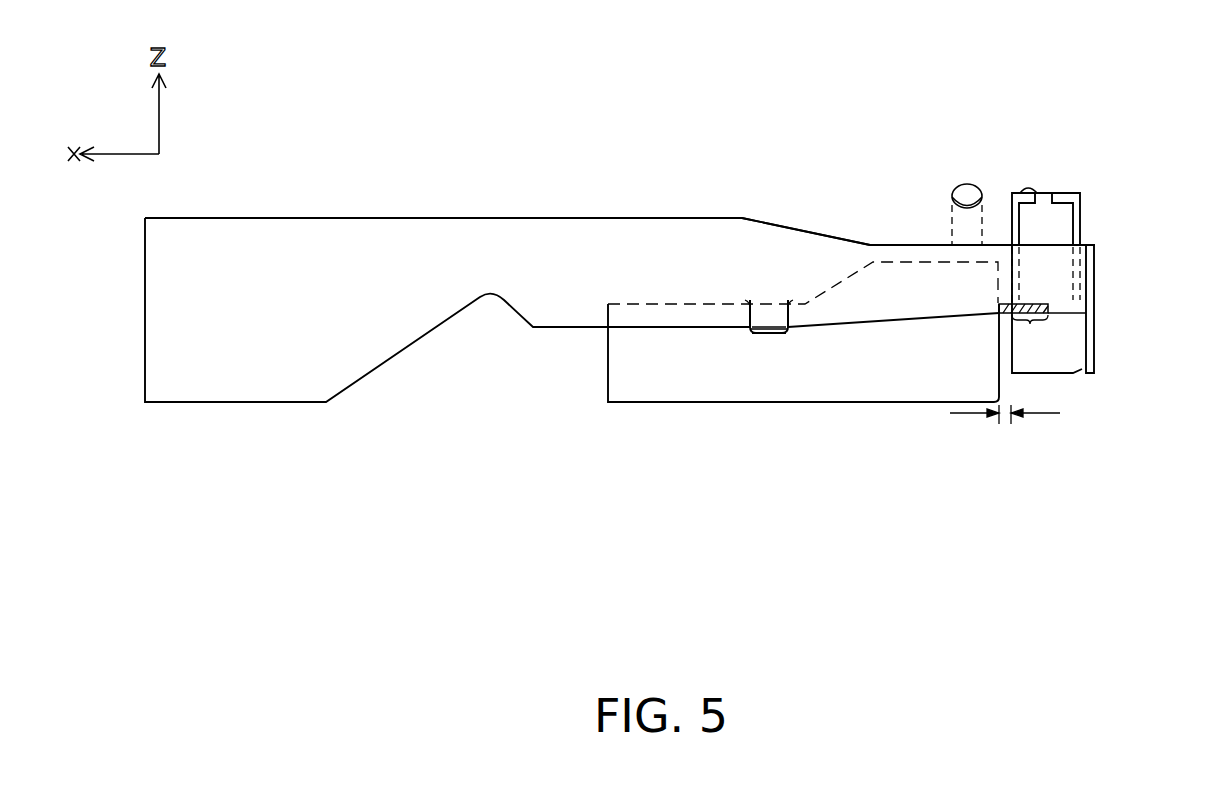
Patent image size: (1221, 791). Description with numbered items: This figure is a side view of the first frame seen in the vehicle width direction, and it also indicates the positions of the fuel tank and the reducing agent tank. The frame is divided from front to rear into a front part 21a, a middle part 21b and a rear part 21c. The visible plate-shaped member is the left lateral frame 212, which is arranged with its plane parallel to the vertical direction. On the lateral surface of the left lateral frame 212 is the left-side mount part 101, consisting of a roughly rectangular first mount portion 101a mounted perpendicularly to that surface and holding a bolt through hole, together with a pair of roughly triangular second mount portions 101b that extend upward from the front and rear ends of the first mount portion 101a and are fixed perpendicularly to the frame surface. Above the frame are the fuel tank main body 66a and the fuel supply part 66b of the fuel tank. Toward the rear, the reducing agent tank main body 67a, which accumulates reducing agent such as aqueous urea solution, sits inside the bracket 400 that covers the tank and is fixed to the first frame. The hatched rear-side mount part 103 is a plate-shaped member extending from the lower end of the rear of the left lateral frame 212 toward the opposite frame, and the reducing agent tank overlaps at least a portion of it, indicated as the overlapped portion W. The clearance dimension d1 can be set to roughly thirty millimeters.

The left lateral frame 212 is at (375, 285).
The front part 21a is at (143, 492).
The middle part 21b is at (532, 492).
The rear part 21c is at (922, 492).
The left-side mount part 101 is at (772, 307).
The first mount portion 101a is at (767, 335).
The second mount portions 101b is at (748, 310).
The fuel tank main body 66a is at (893, 338).
The fuel supply part 66b is at (970, 198).
The reducing agent tank main body 67a is at (1053, 198).
The rear-side mount part 103 is at (1048, 315).
The bracket 400 is at (1033, 363).
The overlapped portion W is at (1030, 333).
The dimension of clearance d1 is at (1005, 430).